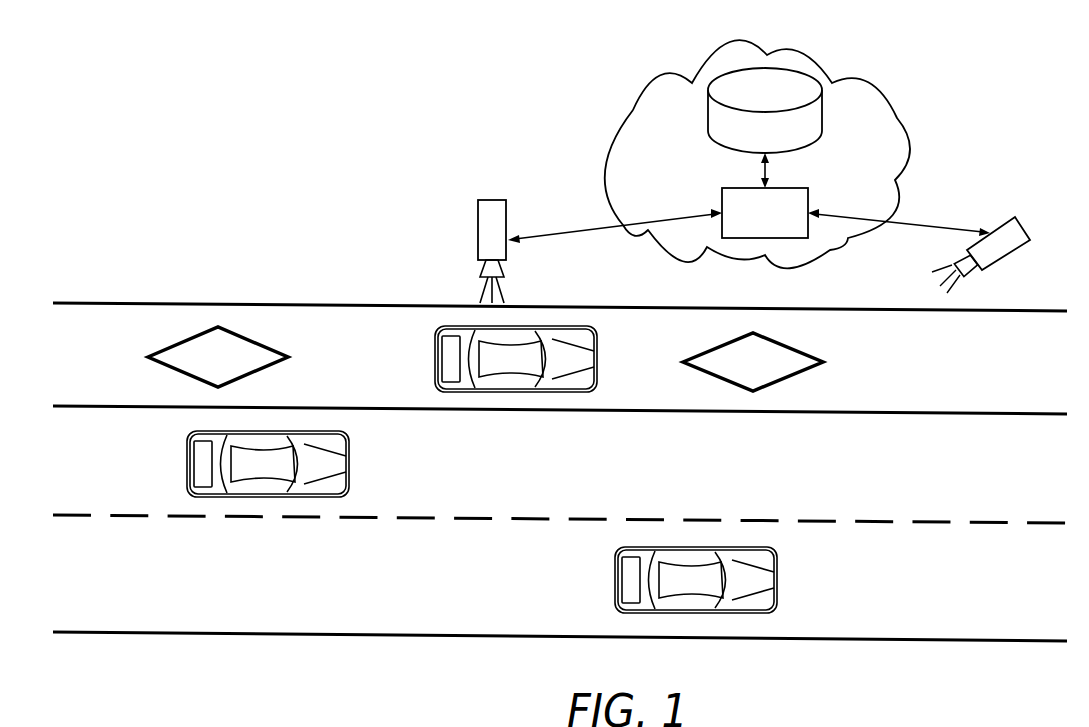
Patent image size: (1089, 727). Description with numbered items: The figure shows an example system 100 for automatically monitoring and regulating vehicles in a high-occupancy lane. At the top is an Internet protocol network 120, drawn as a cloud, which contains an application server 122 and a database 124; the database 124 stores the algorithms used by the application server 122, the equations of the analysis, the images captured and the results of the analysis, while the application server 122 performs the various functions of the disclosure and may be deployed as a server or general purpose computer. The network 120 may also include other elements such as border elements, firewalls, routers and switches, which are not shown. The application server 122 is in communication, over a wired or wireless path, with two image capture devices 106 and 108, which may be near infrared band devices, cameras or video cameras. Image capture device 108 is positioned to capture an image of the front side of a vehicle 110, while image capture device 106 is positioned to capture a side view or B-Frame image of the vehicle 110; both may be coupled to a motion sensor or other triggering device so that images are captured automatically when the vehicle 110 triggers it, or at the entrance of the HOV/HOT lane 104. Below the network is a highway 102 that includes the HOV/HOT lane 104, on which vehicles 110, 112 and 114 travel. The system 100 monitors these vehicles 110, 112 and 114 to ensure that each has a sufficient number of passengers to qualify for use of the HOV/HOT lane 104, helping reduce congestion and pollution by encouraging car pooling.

The system 100 is at (520, 102).
The highway 102 is at (888, 641).
The HOV/HOT lane 104 is at (1003, 311).
The image capture device 106 is at (492, 200).
The image capture device 108 is at (1022, 227).
The vehicle 110 is at (598, 358).
The vehicle 112 is at (352, 461).
The vehicle 114 is at (612, 582).
The Internet protocol (IP) network 120 is at (633, 108).
The application server 122 is at (797, 187).
The database 124 is at (703, 118).